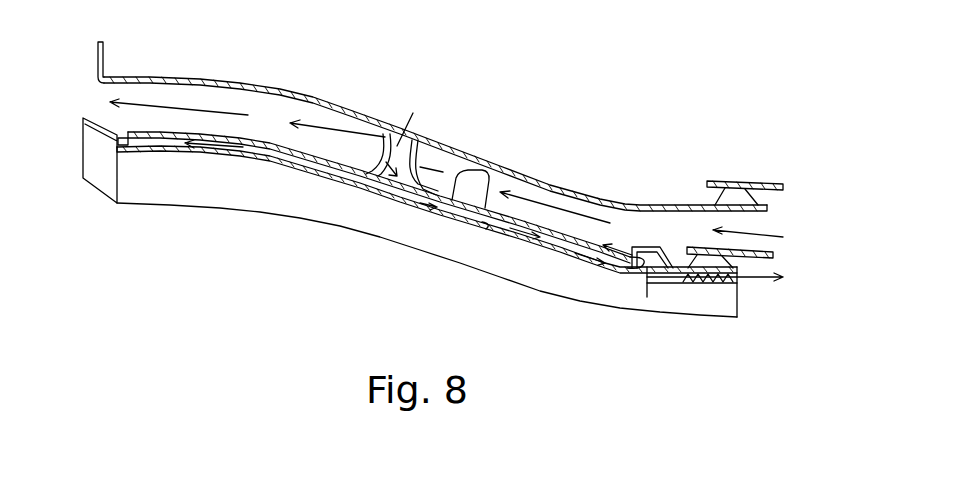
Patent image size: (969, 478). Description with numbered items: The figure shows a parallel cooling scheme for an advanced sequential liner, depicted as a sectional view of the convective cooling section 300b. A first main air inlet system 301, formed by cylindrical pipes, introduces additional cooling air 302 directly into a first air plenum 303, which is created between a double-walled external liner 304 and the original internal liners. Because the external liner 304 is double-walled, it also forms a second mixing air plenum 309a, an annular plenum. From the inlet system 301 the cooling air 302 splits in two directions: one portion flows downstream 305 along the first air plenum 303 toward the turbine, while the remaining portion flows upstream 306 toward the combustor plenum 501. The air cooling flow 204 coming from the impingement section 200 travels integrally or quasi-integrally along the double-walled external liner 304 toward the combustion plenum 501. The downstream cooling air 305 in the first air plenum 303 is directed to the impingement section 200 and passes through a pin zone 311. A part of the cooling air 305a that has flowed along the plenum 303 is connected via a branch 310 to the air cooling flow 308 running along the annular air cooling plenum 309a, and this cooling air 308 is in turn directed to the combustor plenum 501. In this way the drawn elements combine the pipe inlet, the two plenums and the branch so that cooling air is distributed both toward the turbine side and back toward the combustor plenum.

The impingement section 200 is at (790, 290).
The air cooling flow 204 is at (782, 237).
The convective cooling section 300b is at (451, 287).
The first main air inlet system 301 is at (395, 146).
The additional cooling air 302 is at (415, 117).
The first air plenum 303 is at (278, 158).
The double-walled external liner 304 is at (248, 137).
The downstream cooling air flow 305 is at (648, 276).
The part of the cooling air 305a is at (630, 256).
The upstream cooling air flow 306 is at (222, 147).
The air cooling flow 308 is at (183, 108).
The second mixing air plenum 309a is at (343, 155).
The branch 310 is at (638, 246).
The pin zone 311 is at (713, 278).
The combustor plenum 501 is at (65, 110).